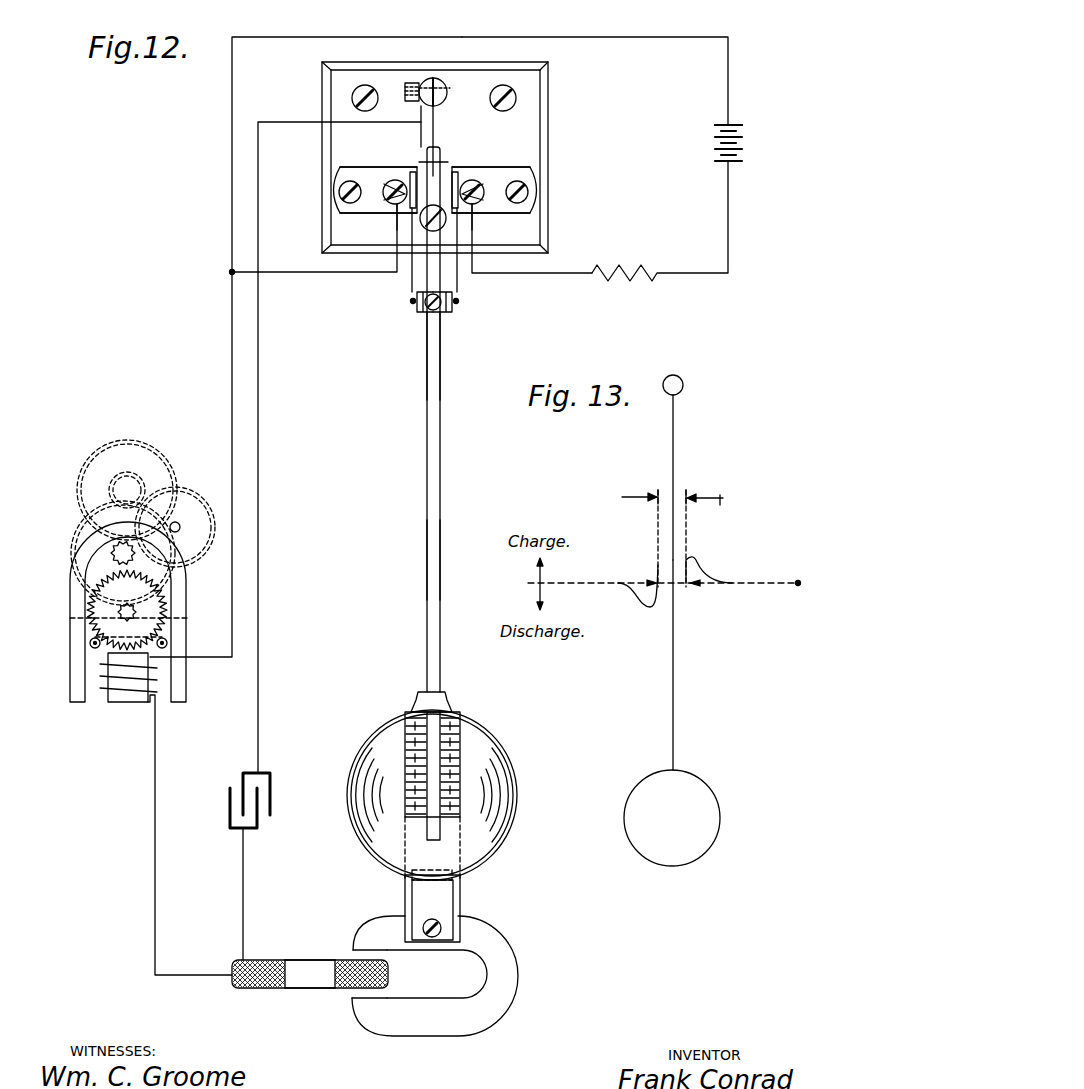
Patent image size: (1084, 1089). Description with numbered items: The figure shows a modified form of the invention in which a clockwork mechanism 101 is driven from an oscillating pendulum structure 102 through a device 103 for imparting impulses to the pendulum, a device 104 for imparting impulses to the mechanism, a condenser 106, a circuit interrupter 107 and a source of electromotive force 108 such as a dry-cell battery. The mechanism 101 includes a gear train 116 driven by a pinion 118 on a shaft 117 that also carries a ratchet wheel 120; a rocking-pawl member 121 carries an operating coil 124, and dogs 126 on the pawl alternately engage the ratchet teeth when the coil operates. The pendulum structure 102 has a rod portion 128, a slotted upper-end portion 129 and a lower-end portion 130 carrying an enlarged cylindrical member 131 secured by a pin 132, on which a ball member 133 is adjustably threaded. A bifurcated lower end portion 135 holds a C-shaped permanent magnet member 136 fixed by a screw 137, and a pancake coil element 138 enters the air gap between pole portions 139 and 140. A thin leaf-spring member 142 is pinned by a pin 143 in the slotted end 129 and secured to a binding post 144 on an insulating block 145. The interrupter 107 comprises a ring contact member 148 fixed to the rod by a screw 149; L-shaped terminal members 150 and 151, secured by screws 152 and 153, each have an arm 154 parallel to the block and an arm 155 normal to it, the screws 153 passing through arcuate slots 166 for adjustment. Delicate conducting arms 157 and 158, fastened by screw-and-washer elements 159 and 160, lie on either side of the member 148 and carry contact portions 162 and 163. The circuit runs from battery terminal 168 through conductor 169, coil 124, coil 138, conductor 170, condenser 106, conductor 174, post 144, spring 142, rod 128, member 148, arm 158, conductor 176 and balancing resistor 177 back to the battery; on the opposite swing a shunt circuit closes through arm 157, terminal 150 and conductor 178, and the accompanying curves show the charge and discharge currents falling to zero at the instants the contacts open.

In FIG. 12, the clockwork mechanism 101 is at (133, 423).
In FIG. 12, the pendulum structure 102 is at (415, 479).
In FIG. 13, the pendulum structure 102 is at (652, 673).
In FIG. 12, the impulse-imparting device for the pendulum 103 is at (314, 927).
In FIG. 12, the impulse-imparting mechanism 104 is at (77, 737).
In FIG. 12, the condenser 106 is at (314, 796).
In FIG. 12, the circuit interrupter 107 is at (372, 302).
In FIG. 12, the source of electromotive force 108 is at (792, 147).
In FIG. 12, the gear train 116 is at (57, 489).
In FIG. 12, the shaft 117 is at (70, 620).
In FIG. 12, the pinion 118 is at (180, 618).
In FIG. 12, the ratchet wheel 120 is at (162, 601).
In FIG. 12, the rocking-pawl member 121 is at (133, 703).
In FIG. 12, the operating coil 124 is at (158, 688).
In FIG. 12, the actuating teeth or dogs 126 is at (89, 643).
In FIG. 12, the rod portion 128 is at (427, 560).
In FIG. 12, the slotted upper-end portion 129 is at (441, 152).
In FIG. 12, the lower-end portion 130 is at (441, 670).
In FIG. 12, the enlarged cylindrical member 131 is at (455, 713).
In FIG. 12, the pin 132 is at (433, 822).
In FIG. 12, the weight or ball member 133 is at (518, 796).
In FIG. 13, the weight or ball member 133 is at (721, 815).
In FIG. 12, the bifurcated lower end portion 135 is at (461, 900).
In FIG. 12, the permanent magnet member 136 is at (519, 976).
In FIG. 12, the screw 137 is at (433, 940).
In FIG. 12, the coil element 138 is at (272, 990).
In FIG. 12, the pole portion 139 is at (354, 951).
In FIG. 12, the pole portion 140 is at (352, 1002).
In FIG. 12, the leaf-spring member 142 is at (437, 121).
In FIG. 12, the pin 143 is at (448, 162).
In FIG. 12, the binding post 144 is at (441, 79).
In FIG. 13, the binding post 144 is at (683, 385).
In FIG. 12, the supporting base member or block 145 is at (548, 100).
In FIG. 12, the contact member 148 is at (420, 316).
In FIG. 13, the contact member 148 is at (674, 442).
In FIG. 12, the screw 149 is at (444, 316).
In FIG. 12, the terminal member 150 is at (360, 208).
In FIG. 12, the terminal member 151 is at (517, 208).
In FIG. 12, the screw 152 is at (397, 206).
In FIG. 12, the screw 153 is at (339, 192).
In FIG. 12, the arm 154 is at (340, 208).
In FIG. 12, the arm 155 is at (414, 172).
In FIG. 12, the conducting arm 157 is at (412, 263).
In FIG. 13, the conducting arm 157 is at (631, 500).
In FIG. 12, the conducting arm 158 is at (458, 263).
In FIG. 13, the conducting arm 158 is at (718, 502).
In FIG. 12, the screw-and-washer element 159 is at (402, 183).
In FIG. 12, the screw-and-washer element 160 is at (387, 183).
In FIG. 12, the contact portion 162 is at (412, 301).
In FIG. 12, the contact portion 163 is at (456, 301).
In FIG. 12, the arcuate slot 166 is at (345, 213).
In FIG. 12, the battery terminal 168 is at (730, 123).
In FIG. 12, the conductor 169 is at (456, 37).
In FIG. 12, the conductor 170 is at (243, 884).
In FIG. 12, the conductor 174 is at (262, 547).
In FIG. 12, the conductor 176 is at (540, 274).
In FIG. 12, the balancing resistor 177 is at (637, 279).
In FIG. 12, the conductor 178 is at (312, 273).